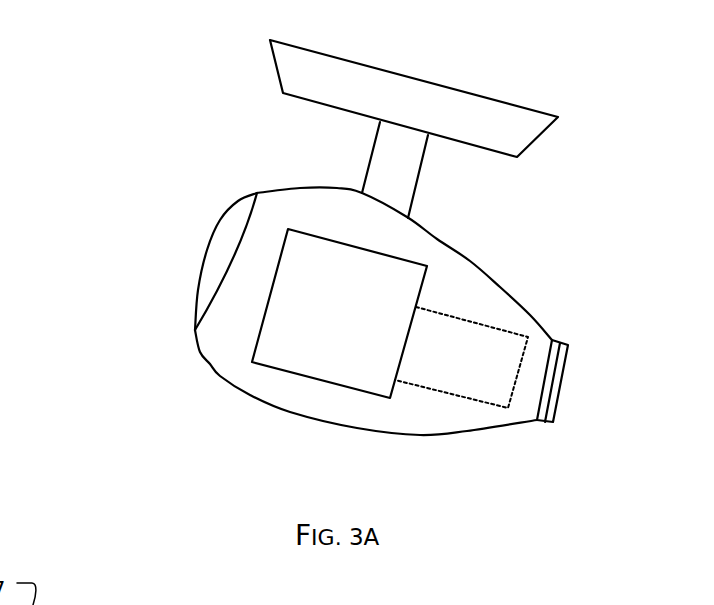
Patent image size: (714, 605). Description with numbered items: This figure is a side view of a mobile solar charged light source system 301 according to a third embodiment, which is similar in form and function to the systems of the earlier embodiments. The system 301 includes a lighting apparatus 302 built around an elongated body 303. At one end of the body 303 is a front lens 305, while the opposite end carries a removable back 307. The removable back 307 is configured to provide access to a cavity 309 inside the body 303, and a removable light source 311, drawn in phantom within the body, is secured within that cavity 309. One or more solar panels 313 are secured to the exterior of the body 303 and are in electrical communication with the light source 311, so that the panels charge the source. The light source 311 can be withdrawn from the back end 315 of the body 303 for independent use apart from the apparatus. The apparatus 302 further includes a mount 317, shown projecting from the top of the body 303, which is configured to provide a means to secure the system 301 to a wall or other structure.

The mobile solar charged light source system 301 is at (115, 113).
The lighting apparatus 302 is at (227, 412).
The elongated body 303 is at (357, 429).
The front lens 305 is at (208, 250).
The removable back 307 is at (553, 422).
The cavity 309 is at (237, 360).
The removable light source 311 is at (468, 398).
The solar panel 313 is at (325, 381).
The back end 315 is at (517, 522).
The mount 317 is at (277, 73).